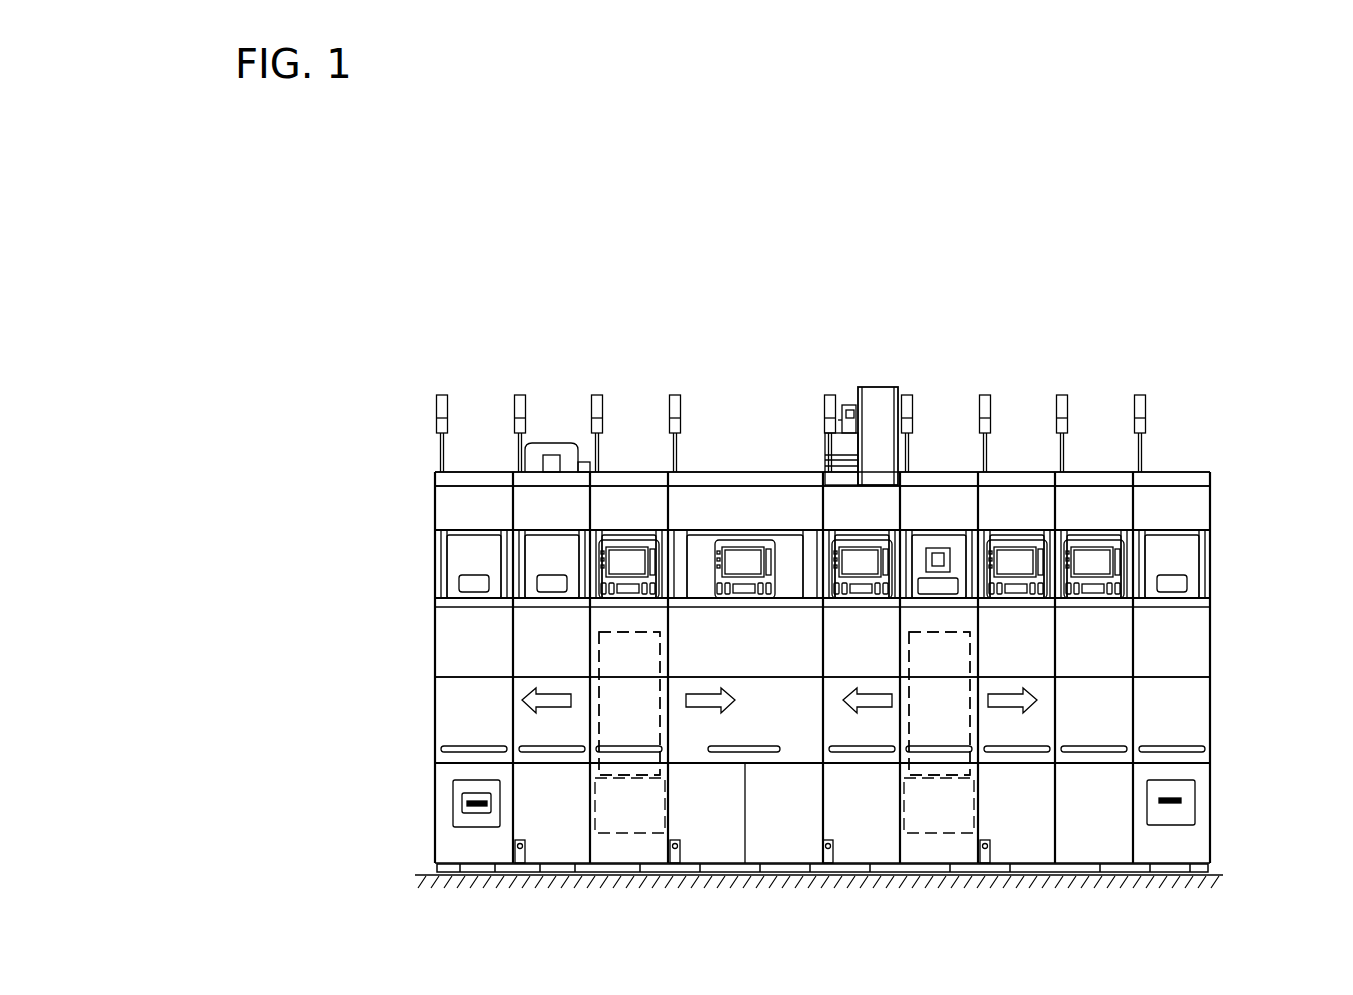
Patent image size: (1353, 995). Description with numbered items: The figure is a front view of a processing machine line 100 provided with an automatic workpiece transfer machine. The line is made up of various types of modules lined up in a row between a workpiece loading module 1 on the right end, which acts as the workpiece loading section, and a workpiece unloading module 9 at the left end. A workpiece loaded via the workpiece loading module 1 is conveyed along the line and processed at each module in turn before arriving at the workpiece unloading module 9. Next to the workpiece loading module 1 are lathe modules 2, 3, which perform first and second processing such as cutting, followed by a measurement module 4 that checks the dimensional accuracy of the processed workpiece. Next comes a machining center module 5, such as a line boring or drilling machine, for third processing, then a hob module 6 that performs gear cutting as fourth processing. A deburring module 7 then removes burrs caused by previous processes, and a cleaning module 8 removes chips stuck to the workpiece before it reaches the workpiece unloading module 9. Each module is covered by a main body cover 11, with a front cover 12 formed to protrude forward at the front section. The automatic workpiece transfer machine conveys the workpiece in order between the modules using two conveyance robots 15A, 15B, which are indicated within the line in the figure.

The processing machine line 100 is at (850, 299).
The workpiece loading module 1 is at (1174, 492).
The lathe module 2 is at (1088, 492).
The lathe module 3 is at (1015, 492).
The measurement module 4 is at (935, 492).
The machining center module 5 is at (878, 478).
The hob module 6 is at (748, 492).
The deburring module 7 is at (636, 492).
The cleaning module 8 is at (550, 492).
The workpiece unloading module 9 is at (468, 492).
The main body cover 11 is at (1208, 500).
The front cover 12 is at (1190, 688).
The conveyance robot 15A is at (957, 708).
The conveyance robot 15B is at (652, 715).